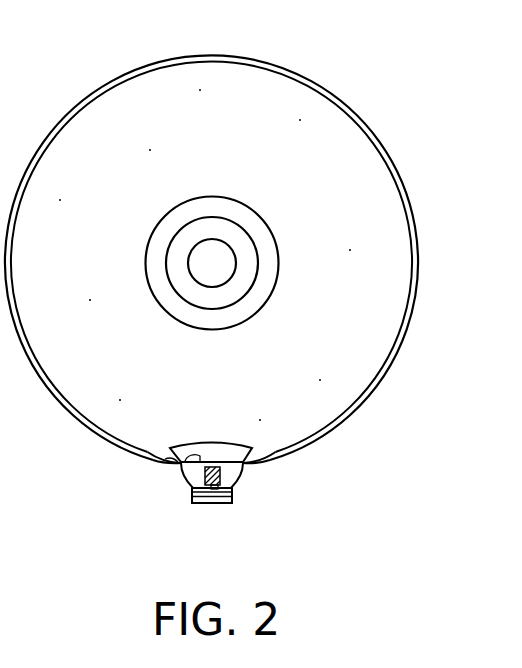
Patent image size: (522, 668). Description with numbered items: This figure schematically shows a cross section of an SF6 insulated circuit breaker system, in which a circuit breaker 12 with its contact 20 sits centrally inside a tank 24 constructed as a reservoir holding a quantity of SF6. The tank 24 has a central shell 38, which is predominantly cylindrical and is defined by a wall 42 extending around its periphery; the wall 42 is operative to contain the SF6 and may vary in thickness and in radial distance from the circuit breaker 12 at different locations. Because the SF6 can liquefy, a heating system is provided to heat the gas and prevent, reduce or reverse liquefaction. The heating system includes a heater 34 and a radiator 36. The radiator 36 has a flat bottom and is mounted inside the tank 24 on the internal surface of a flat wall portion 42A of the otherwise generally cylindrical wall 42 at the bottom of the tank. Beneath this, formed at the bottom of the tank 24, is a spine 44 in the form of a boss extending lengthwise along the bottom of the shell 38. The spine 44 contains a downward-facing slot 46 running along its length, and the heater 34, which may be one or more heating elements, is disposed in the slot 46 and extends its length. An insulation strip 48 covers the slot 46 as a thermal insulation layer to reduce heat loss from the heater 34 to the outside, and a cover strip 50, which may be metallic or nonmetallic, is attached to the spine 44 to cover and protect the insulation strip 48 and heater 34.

The tank 24 is at (389, 70).
The central shell 38 is at (408, 190).
The wall 42 is at (388, 360).
The flat wall portion 42A is at (168, 459).
The sulfur hexafluoride SF6 is at (89, 137).
The circuit breaker 12 is at (184, 329).
The contact 20 is at (214, 239).
The radiator 36 is at (229, 443).
The spine 44 is at (190, 486).
The slot 46 is at (233, 490).
The heater 34 is at (212, 494).
The insulation strip 48 is at (193, 492).
The cover strip 50 is at (226, 504).